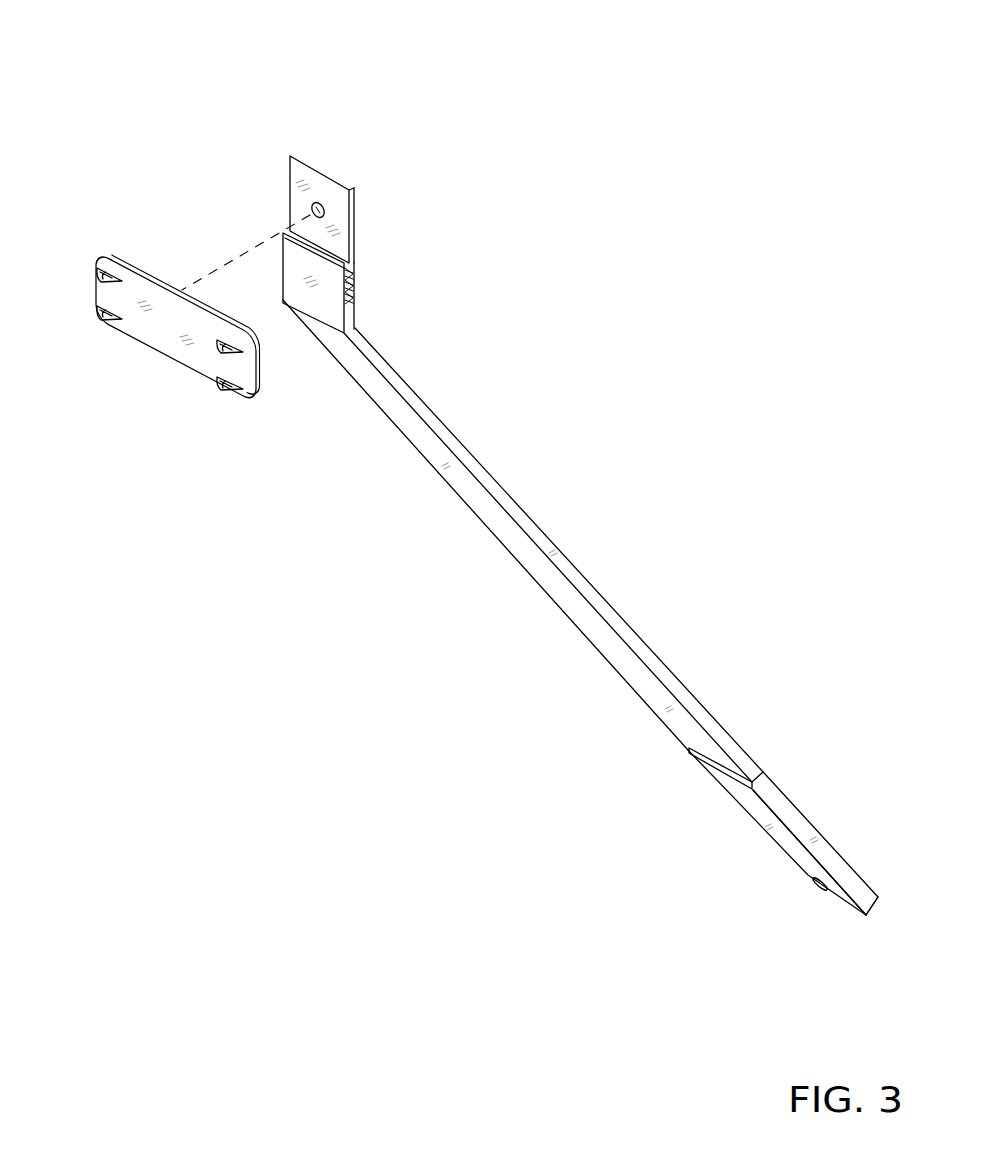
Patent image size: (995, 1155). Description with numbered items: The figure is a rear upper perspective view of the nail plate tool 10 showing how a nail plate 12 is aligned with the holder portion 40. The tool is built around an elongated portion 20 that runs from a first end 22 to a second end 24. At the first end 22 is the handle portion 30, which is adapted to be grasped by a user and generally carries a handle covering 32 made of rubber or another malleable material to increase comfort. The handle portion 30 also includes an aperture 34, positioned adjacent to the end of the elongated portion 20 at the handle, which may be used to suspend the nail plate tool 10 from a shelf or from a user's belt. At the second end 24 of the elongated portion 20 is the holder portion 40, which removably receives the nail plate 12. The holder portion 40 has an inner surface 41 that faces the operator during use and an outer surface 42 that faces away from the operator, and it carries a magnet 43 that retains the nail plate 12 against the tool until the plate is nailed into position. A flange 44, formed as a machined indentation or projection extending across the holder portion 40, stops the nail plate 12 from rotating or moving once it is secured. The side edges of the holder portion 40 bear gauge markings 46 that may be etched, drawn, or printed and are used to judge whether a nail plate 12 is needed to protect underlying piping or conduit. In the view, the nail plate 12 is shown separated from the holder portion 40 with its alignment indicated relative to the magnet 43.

The nail plate tool 10 is at (645, 172).
The nail plate 12 is at (165, 335).
The elongated portion 20 is at (591, 585).
The first end 22 is at (358, 330).
The second end 24 is at (751, 766).
The handle portion 30 is at (767, 838).
The handle covering 32 is at (826, 853).
The aperture 34 is at (814, 881).
The holder portion 40 is at (356, 247).
The inner surface 41 is at (356, 217).
The outer surface 42 is at (332, 195).
The magnet 43 is at (312, 207).
The flange 44 is at (300, 241).
The gauge markings 46 is at (357, 285).